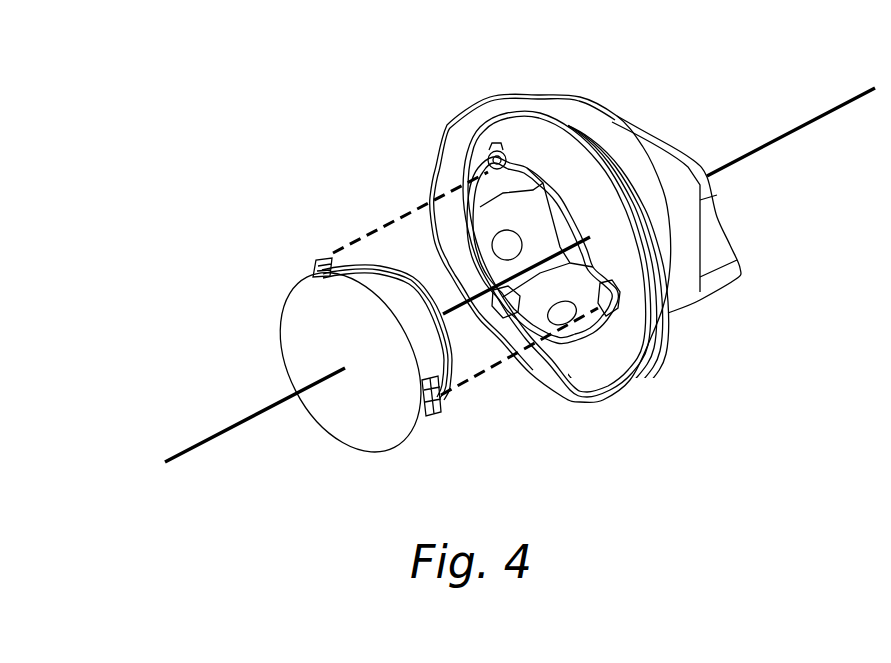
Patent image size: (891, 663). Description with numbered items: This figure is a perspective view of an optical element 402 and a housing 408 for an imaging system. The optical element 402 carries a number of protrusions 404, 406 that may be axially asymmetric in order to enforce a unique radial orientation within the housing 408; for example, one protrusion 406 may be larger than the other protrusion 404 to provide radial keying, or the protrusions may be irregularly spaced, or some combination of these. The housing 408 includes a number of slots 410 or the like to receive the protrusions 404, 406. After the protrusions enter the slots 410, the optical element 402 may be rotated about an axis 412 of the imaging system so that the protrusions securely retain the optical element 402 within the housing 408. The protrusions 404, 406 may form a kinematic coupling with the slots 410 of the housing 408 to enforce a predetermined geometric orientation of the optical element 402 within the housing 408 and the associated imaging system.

The optical element 402 is at (280, 330).
The protrusion 404 is at (316, 263).
The protrusion 406 is at (440, 416).
The housing 408 is at (607, 102).
The slot 410 is at (640, 296).
The axis 412 is at (757, 148).